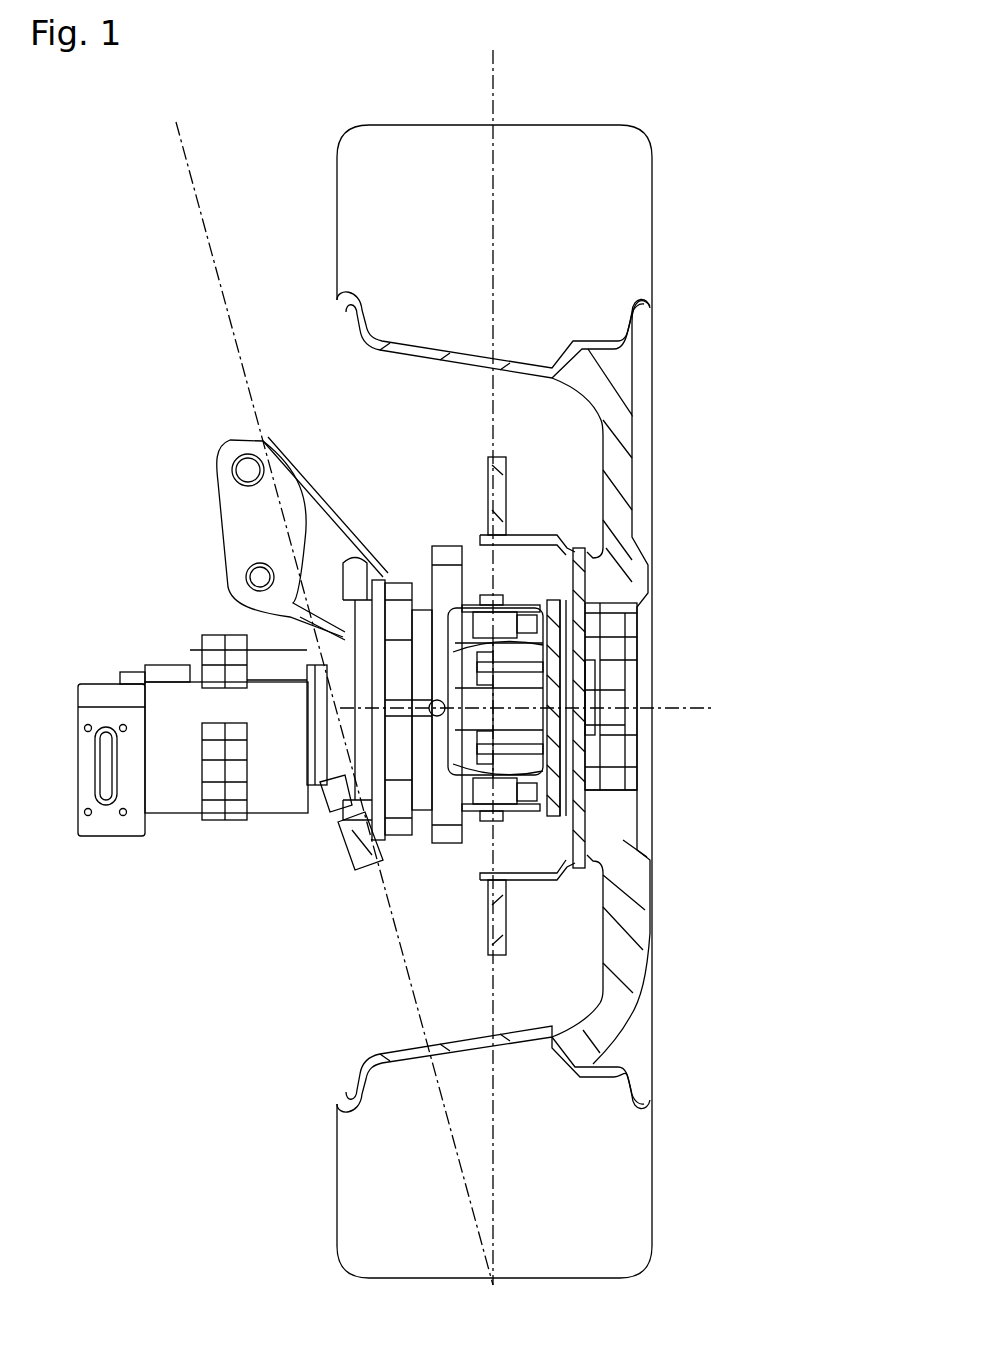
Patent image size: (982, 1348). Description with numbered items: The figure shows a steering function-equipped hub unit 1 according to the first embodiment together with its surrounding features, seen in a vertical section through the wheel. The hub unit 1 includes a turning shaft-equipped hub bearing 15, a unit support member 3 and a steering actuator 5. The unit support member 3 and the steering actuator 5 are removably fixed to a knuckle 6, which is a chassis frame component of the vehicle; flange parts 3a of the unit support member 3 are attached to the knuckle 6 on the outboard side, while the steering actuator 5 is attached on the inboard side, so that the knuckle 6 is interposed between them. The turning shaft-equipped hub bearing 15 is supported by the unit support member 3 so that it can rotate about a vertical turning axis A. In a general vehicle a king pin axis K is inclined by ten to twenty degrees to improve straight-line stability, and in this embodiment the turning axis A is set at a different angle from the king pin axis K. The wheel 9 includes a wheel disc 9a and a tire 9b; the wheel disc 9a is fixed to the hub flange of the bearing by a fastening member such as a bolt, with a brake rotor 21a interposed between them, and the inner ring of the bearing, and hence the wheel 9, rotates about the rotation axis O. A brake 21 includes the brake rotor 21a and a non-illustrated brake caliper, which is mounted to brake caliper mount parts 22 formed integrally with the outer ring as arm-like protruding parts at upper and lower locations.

The steering function-equipped hub unit 1 is at (568, 701).
The unit support member 3 is at (423, 793).
The flange part 3a is at (402, 590).
The steering actuator 5 is at (172, 795).
The knuckle 6 is at (322, 540).
The wheel 9 is at (733, 1005).
The wheel disc 9a is at (630, 930).
The tire 9b is at (628, 1193).
The turning shaft-equipped hub bearing 15 is at (652, 738).
The brake 21 is at (512, 955).
The brake rotor 21a is at (578, 582).
The brake caliper mount part 22 is at (447, 546).
The turning axis A is at (495, 88).
The king pin axis K is at (195, 180).
The rotation axis O is at (690, 706).